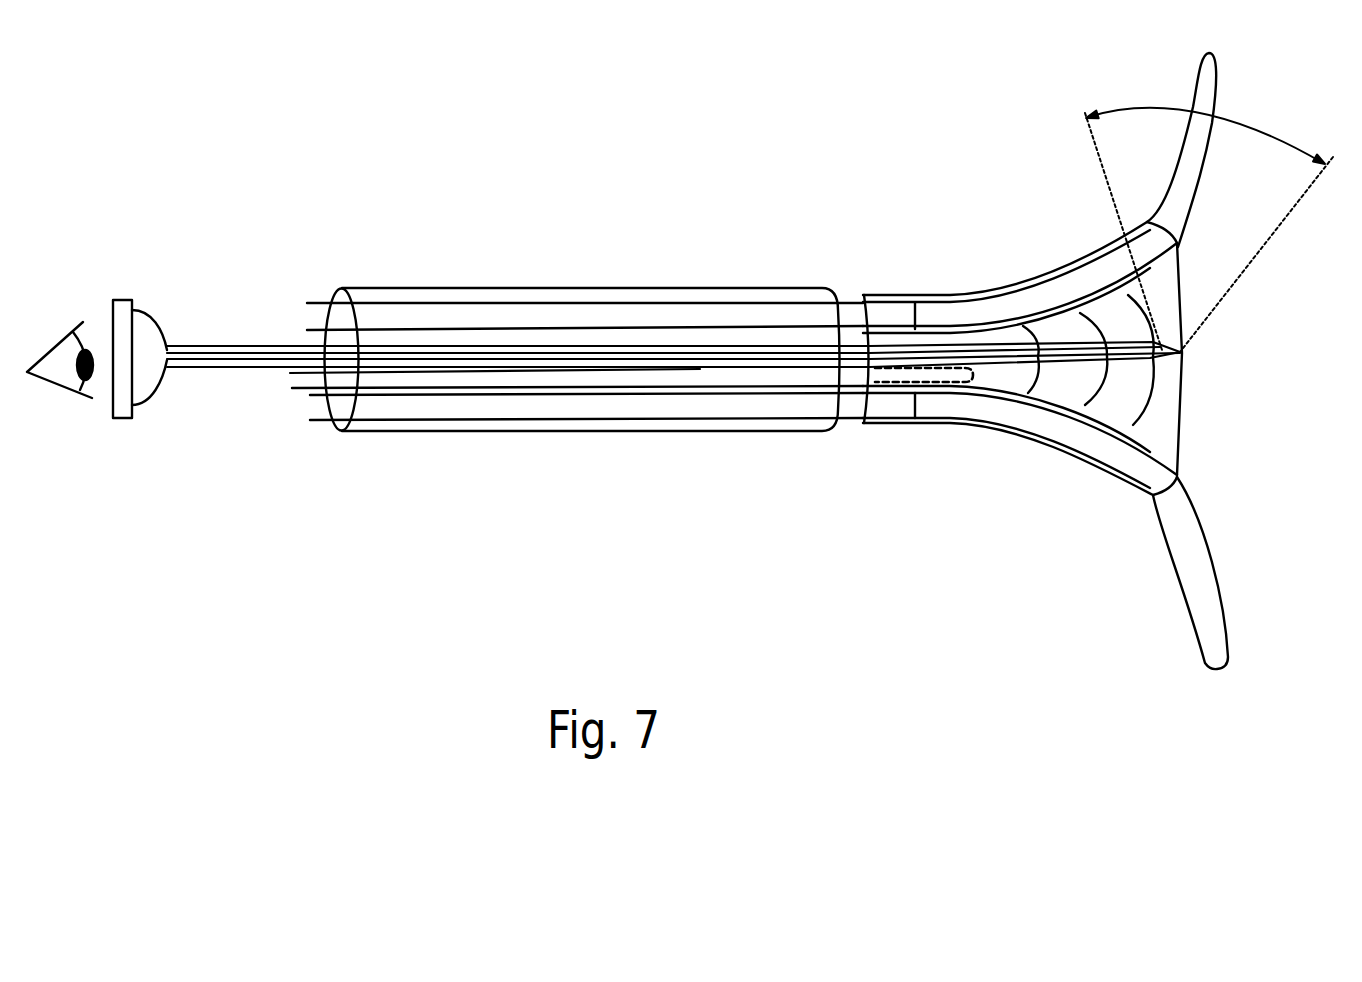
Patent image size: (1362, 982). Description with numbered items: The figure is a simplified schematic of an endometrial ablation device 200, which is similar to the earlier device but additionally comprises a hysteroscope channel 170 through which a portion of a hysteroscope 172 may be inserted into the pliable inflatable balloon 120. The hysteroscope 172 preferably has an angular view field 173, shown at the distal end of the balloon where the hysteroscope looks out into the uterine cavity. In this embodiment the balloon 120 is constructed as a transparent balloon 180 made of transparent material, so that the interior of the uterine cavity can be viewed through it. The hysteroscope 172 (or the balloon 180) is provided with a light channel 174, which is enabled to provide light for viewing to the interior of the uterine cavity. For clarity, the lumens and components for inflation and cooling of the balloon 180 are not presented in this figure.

The pliable inflatable balloon 120 is at (1177, 388).
The hysteroscope channel 170 is at (220, 344).
The hysteroscope 172 is at (147, 393).
The angular view field 173 is at (1282, 223).
The light channel 174 is at (795, 378).
The transparent balloon 180 is at (1172, 427).
The device 200 is at (740, 287).